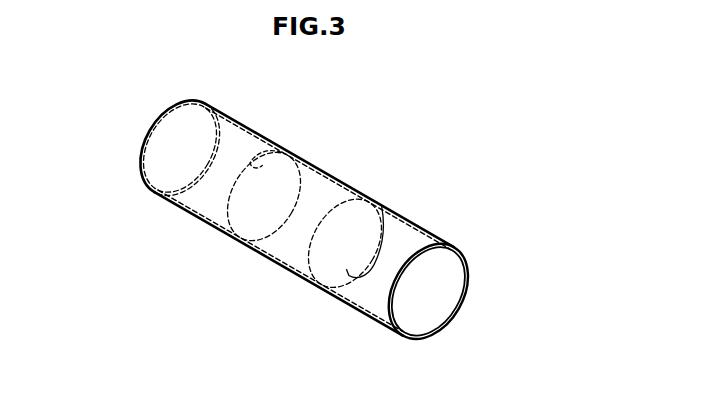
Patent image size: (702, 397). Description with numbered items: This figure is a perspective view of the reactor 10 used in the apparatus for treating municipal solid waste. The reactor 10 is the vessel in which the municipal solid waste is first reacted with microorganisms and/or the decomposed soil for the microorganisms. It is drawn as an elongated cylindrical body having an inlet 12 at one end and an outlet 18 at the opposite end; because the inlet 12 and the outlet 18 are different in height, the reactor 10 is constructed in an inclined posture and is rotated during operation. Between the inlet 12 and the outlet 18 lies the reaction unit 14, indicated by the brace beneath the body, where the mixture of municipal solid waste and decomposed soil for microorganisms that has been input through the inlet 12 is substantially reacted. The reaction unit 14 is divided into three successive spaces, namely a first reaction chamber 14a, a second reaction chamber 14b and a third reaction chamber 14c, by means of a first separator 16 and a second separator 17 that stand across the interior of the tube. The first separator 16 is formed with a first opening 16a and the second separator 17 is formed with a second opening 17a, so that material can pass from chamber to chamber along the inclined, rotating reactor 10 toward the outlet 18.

The reactor 10 is at (358, 141).
The inlet 12 is at (170, 140).
The reaction unit 14 is at (162, 270).
The first reaction chamber 14a is at (205, 205).
The second reaction chamber 14b is at (286, 241).
The third reaction chamber 14c is at (373, 292).
The first separator 16 is at (286, 177).
The first opening 16a is at (264, 156).
The second separator 17 is at (366, 226).
The second opening 17a is at (386, 212).
The outlet 18 is at (428, 290).